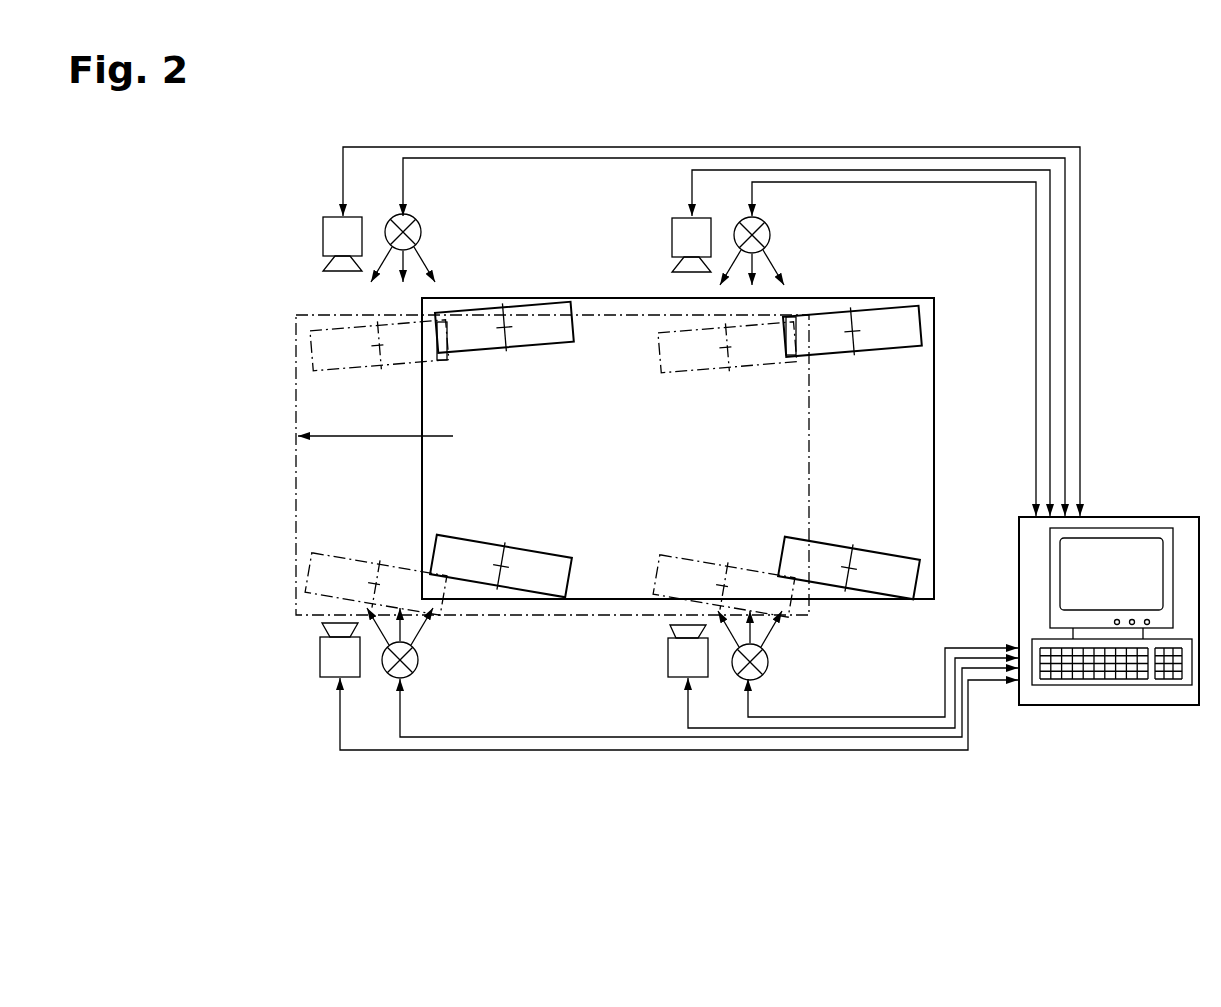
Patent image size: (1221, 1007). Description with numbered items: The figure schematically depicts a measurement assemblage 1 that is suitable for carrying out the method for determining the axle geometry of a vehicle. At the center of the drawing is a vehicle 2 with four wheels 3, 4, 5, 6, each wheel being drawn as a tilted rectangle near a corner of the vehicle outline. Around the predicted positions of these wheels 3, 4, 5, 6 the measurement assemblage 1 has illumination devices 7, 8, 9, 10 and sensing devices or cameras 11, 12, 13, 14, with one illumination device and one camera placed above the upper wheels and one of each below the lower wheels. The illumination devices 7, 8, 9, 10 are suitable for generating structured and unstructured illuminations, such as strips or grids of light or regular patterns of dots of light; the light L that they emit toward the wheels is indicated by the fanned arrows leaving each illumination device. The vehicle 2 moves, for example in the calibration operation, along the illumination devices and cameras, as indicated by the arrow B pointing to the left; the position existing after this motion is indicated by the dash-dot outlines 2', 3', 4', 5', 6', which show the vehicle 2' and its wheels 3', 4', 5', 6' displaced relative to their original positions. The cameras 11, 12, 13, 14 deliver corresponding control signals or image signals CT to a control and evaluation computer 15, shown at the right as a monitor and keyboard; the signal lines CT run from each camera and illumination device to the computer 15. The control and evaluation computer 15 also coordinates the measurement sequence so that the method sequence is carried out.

The measurement assemblage 1 is at (297, 140).
The vehicle 2 is at (713, 448).
The vehicle after motion 2' is at (496, 465).
The wheel 3 is at (504, 294).
The wheel after motion 3' is at (330, 345).
The wheel 4 is at (884, 331).
The wheel after motion 4' is at (773, 307).
The wheel 5 is at (500, 606).
The wheel after motion 5' is at (321, 586).
The wheel 6 is at (878, 568).
The wheel after motion 6' is at (773, 603).
The illumination device 7 is at (413, 232).
The illumination device 8 is at (762, 232).
The illumination device 9 is at (413, 662).
The illumination device 10 is at (763, 663).
The camera 11 is at (332, 242).
The camera 12 is at (682, 235).
The camera 13 is at (328, 657).
The camera 14 is at (670, 660).
The control and evaluation computer 15 is at (1153, 535).
The arrow B is at (343, 437).
The light beams L is at (428, 267).
The control signals or image signals CT is at (1093, 332).